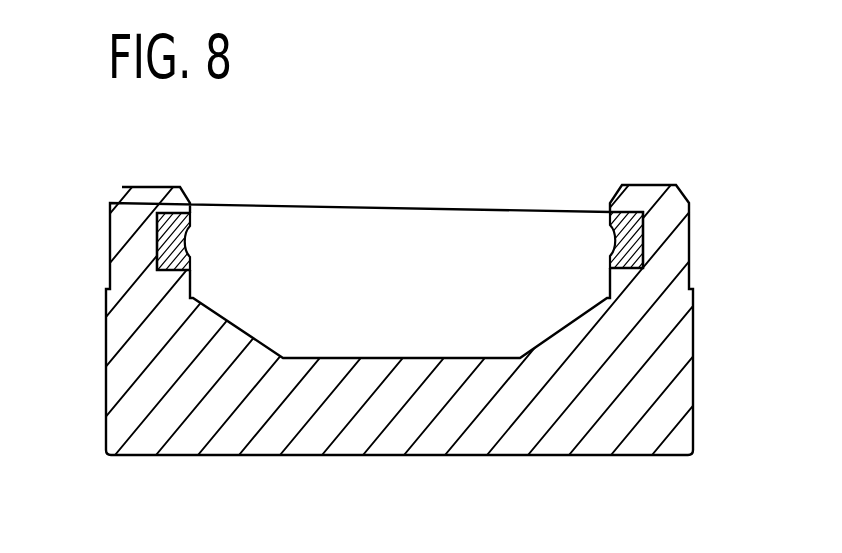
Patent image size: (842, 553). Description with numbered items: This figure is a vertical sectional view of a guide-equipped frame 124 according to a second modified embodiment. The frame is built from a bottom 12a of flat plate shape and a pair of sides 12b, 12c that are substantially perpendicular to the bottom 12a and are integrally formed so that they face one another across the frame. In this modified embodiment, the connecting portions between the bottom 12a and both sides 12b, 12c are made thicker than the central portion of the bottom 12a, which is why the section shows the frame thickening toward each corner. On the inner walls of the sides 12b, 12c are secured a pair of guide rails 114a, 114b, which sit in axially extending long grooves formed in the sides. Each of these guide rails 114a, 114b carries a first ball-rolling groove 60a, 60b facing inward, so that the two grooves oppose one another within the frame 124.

The guide-equipped frame 124 is at (710, 143).
The bottom 12a is at (407, 420).
The side 12b is at (130, 215).
The side 12c is at (673, 213).
The guide rail 114a is at (130, 263).
The guide rail 114b is at (645, 250).
The first ball-rolling groove 60a is at (186, 240).
The first ball-rolling groove 60b is at (616, 240).